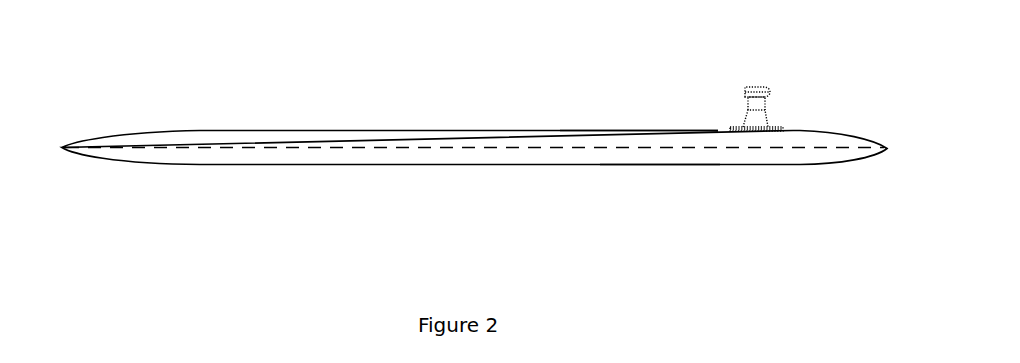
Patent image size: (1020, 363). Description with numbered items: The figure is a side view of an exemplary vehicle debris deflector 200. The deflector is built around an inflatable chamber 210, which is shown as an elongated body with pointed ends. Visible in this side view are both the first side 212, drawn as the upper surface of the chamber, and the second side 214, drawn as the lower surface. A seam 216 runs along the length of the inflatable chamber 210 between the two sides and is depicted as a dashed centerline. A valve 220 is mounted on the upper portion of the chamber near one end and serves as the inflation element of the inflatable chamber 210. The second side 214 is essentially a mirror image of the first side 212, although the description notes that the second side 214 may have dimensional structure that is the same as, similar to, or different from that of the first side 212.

The vehicle debris deflector 200 is at (167, 20).
The inflatable chamber 210 is at (440, 113).
The first side 212 is at (624, 130).
The second side 214 is at (657, 163).
The seam 216 is at (341, 146).
The valve 220 is at (755, 62).